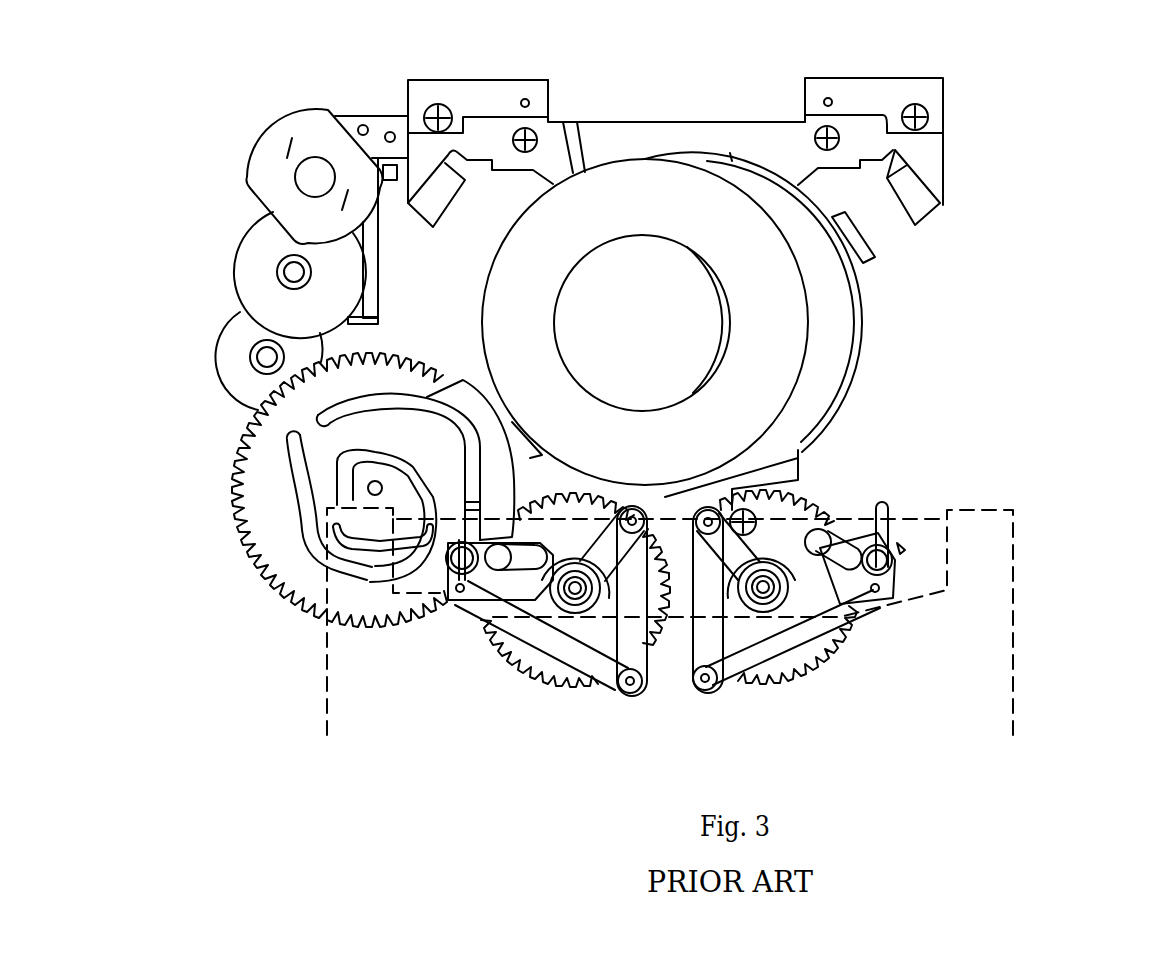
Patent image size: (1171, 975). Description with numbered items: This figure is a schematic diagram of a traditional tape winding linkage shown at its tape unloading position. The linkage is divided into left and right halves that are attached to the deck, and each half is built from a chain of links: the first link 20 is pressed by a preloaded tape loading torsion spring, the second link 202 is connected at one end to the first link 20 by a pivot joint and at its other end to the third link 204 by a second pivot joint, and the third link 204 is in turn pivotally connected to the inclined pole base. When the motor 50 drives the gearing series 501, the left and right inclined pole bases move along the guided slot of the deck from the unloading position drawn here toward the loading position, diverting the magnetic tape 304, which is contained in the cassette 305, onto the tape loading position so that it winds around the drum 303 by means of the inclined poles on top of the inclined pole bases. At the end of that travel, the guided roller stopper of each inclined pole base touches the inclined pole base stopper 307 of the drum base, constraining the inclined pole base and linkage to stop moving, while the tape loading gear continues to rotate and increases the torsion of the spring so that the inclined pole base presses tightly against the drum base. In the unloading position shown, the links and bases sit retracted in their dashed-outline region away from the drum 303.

The first link 20 is at (735, 548).
The motor 50 is at (265, 145).
The second link 202 is at (708, 650).
The third link 204 is at (740, 675).
The drum 303 is at (650, 183).
The magnetic tape 304 is at (868, 525).
The cassette 305 is at (988, 605).
The inclined pole base stopper 307 is at (852, 160).
The gearing series 501 is at (250, 263).